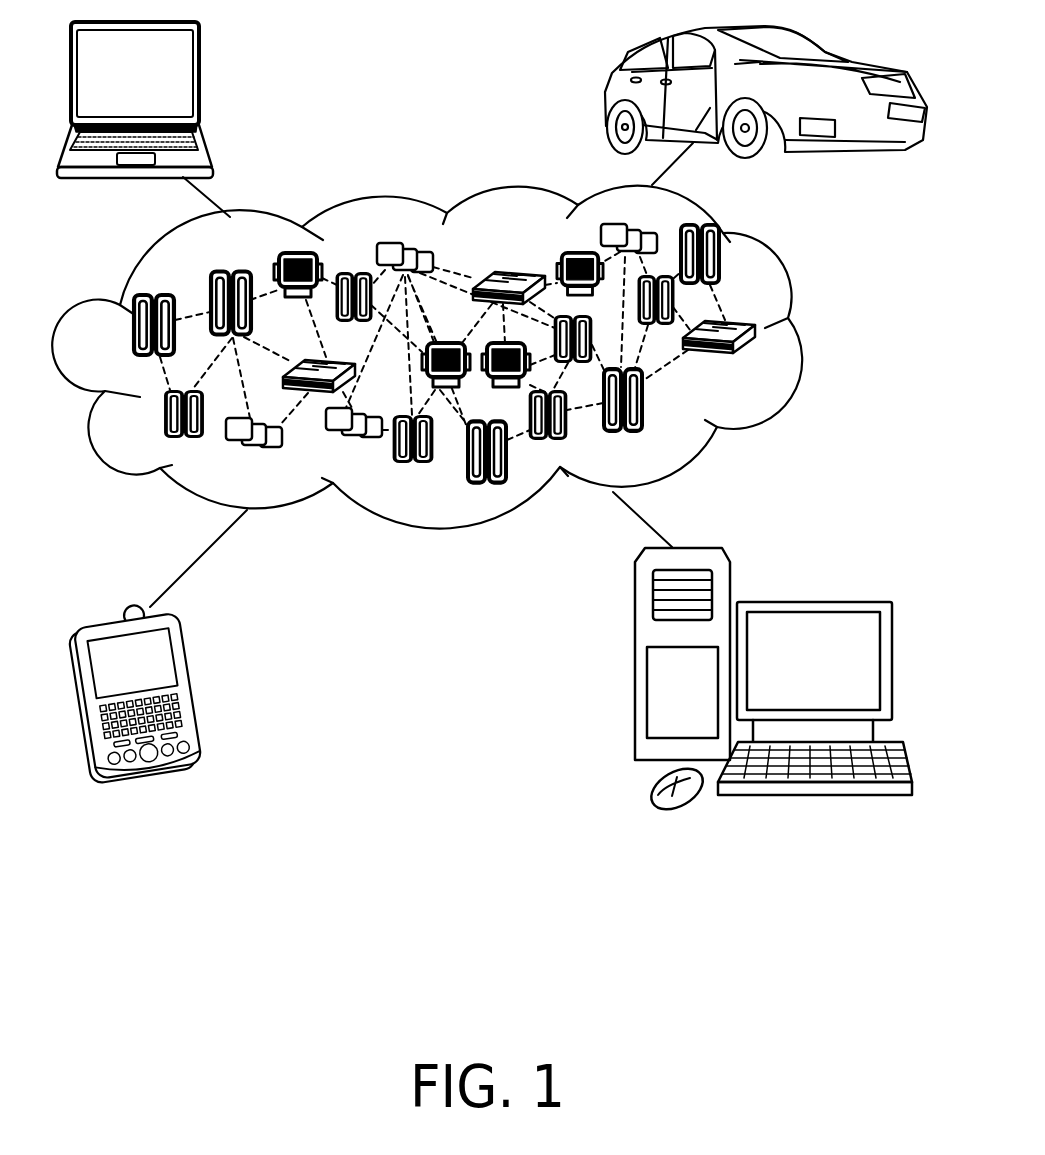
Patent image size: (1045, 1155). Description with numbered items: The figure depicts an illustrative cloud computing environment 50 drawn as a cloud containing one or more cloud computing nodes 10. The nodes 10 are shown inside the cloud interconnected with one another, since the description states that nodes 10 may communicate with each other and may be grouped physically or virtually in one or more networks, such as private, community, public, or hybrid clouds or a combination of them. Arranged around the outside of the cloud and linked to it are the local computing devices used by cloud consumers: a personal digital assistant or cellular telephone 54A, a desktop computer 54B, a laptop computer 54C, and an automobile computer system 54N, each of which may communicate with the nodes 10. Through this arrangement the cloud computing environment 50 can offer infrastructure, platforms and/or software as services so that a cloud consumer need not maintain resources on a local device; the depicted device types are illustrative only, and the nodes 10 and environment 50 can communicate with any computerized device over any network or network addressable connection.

The cloud computing node 10 is at (756, 360).
The cloud computing environment 50 is at (812, 334).
The personal digital assistant (PDA) or cellular telephone 54A is at (188, 690).
The desktop computer 54B is at (812, 598).
The laptop computer 54C is at (200, 80).
The automobile computer system 54N is at (606, 95).